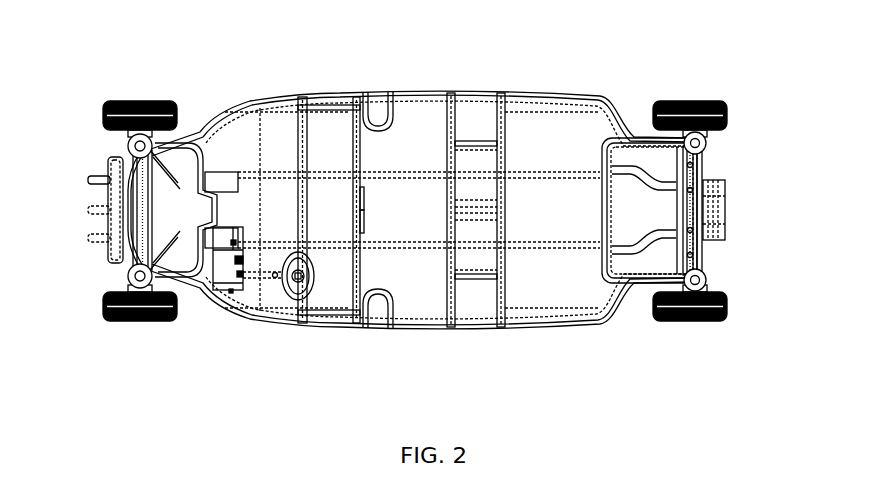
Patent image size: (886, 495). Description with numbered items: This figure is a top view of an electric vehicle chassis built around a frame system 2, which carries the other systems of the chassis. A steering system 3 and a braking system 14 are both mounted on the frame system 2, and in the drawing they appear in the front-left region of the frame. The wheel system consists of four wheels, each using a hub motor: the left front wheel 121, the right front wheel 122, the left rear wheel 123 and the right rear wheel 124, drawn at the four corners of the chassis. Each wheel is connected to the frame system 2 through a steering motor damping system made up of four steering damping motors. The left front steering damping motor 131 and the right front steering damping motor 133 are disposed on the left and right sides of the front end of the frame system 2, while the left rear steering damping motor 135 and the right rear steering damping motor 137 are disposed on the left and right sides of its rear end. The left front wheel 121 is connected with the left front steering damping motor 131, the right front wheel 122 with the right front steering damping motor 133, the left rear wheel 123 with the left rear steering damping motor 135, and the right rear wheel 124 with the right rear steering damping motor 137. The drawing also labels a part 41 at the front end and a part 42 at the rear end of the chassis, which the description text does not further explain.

The frame system 2 is at (568, 335).
The steering system 3 is at (312, 300).
The braking system 14 is at (240, 305).
The front connecting portion 41 is at (88, 175).
The rear connecting portion 42 is at (735, 196).
The left front wheel 121 is at (153, 322).
The right front wheel 122 is at (143, 100).
The left rear wheel 123 is at (695, 322).
The right rear wheel 124 is at (690, 100).
The left front steering damping motor 131 is at (123, 277).
The right front steering damping motor 133 is at (128, 143).
The left rear steering damping motor 135 is at (706, 281).
The right rear steering damping motor 137 is at (706, 140).